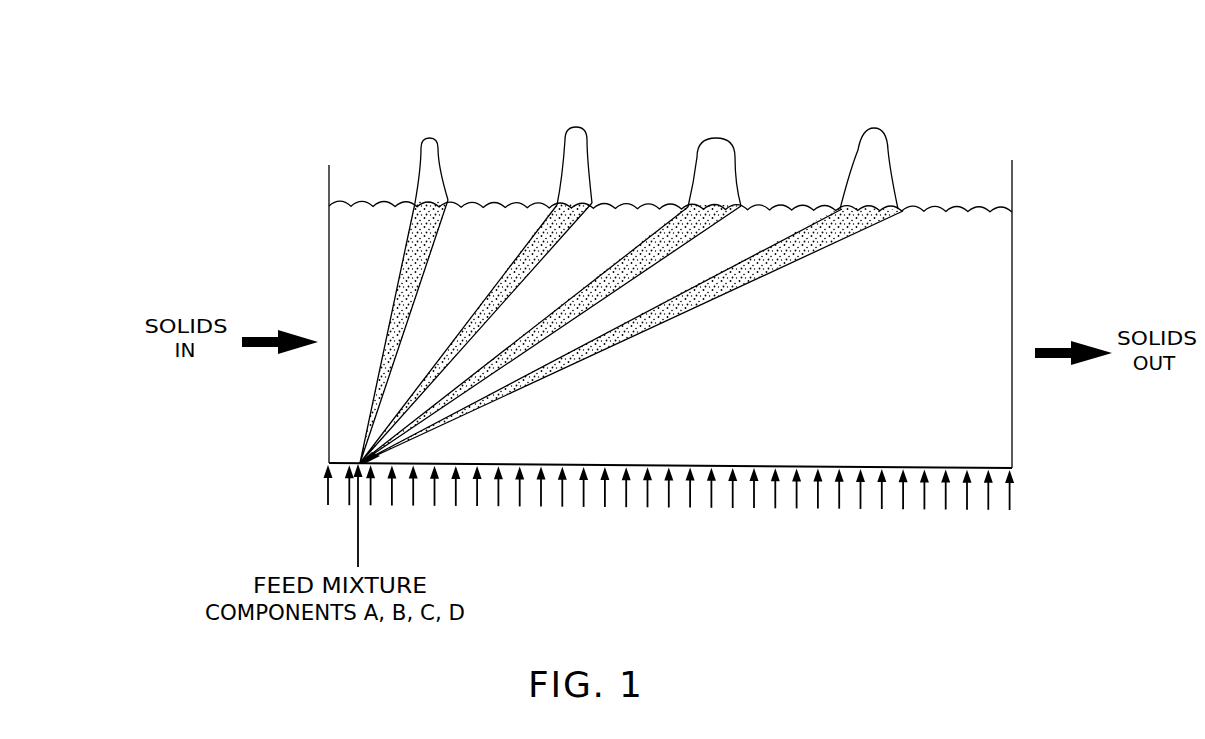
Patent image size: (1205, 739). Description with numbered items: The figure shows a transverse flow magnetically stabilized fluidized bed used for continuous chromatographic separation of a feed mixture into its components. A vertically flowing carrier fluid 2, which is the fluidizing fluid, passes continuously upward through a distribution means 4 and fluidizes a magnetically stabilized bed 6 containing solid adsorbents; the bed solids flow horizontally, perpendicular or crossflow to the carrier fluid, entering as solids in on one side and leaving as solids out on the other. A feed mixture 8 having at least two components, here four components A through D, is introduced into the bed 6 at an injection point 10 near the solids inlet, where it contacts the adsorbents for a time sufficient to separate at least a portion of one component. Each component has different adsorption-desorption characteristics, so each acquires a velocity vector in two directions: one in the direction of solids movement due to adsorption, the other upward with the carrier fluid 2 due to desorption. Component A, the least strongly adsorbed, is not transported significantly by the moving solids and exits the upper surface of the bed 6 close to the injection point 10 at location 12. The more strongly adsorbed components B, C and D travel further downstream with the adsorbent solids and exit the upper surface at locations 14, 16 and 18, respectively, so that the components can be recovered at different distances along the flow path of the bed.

The carrier fluid 2 is at (775, 497).
The distribution means 4 is at (595, 465).
The magnetically stabilized bed 6 is at (890, 360).
The feed mixture 8 is at (360, 517).
The injection point 10 is at (357, 460).
The exit location for component A 12 is at (435, 139).
The exit location for component B 14 is at (578, 126).
The exit location for component C 16 is at (720, 138).
The exit location for component D 18 is at (880, 128).